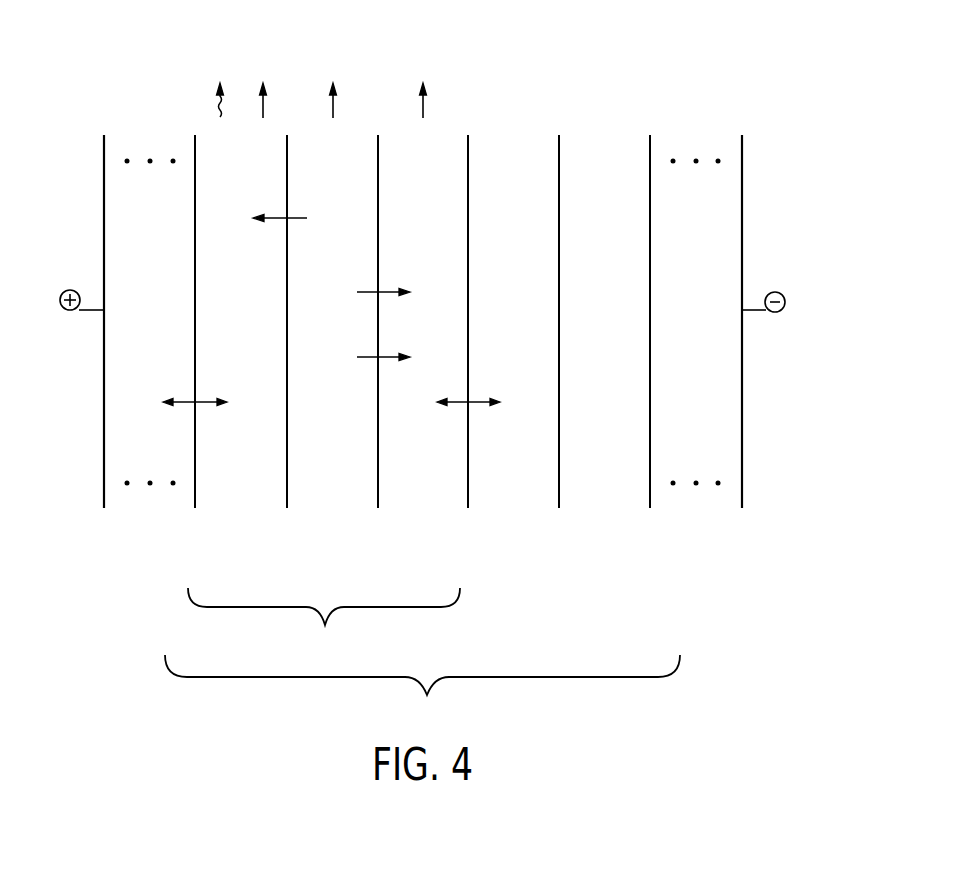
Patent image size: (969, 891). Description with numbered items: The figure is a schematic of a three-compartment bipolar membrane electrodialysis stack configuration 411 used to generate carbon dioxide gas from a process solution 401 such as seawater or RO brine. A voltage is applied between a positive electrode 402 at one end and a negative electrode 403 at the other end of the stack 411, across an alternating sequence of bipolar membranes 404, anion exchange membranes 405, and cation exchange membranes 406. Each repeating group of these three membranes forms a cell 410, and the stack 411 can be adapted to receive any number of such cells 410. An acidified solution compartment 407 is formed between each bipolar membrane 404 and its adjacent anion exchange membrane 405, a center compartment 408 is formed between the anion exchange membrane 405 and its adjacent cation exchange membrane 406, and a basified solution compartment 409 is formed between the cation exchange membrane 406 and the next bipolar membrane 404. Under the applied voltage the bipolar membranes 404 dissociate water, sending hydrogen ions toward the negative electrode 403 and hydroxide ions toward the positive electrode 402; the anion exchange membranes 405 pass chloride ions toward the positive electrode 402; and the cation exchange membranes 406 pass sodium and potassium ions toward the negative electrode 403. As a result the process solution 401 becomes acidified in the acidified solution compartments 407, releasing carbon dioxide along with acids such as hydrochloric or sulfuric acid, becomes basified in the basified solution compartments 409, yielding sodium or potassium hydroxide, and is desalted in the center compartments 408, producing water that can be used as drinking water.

The process solution 401 is at (248, 520).
The positive electrode 402 is at (72, 290).
The negative electrode 403 is at (775, 292).
The bipolar membrane 404 is at (195, 490).
The anion exchange membrane 405 is at (287, 490).
The cation exchange membrane 406 is at (378, 490).
The acidified solution compartment 407 is at (268, 142).
The center compartment 408 is at (360, 142).
The basified solution compartment 409 is at (450, 142).
The cell 410 is at (324, 622).
The BPMED membrane stack 411 is at (422, 690).